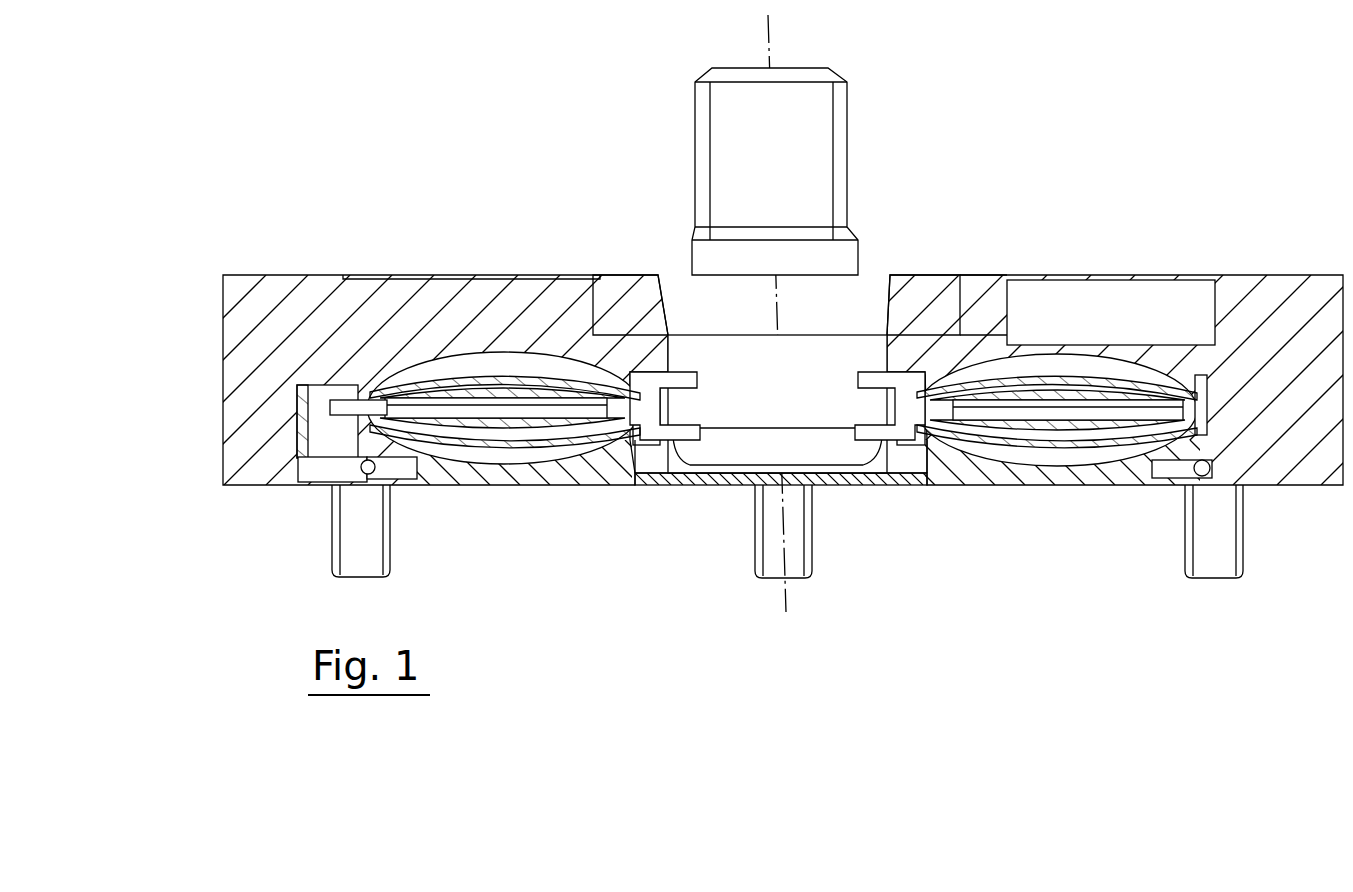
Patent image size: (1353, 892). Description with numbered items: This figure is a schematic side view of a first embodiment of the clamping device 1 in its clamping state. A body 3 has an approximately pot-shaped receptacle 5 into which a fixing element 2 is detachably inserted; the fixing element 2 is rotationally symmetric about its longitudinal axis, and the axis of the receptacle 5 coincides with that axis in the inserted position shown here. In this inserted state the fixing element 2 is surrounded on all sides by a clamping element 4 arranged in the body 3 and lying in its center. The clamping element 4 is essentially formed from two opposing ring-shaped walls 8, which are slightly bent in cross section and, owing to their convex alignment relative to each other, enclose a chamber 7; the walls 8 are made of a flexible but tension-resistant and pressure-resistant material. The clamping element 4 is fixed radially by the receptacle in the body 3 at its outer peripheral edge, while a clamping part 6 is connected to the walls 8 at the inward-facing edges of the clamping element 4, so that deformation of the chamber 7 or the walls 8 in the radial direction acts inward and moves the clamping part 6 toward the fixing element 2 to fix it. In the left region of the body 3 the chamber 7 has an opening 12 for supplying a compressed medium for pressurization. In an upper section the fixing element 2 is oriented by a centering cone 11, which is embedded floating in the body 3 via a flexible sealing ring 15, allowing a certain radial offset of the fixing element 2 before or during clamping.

The optical assembly 1 is at (222, 142).
The fixing element 2 is at (812, 118).
The body 3 is at (270, 292).
The clamping element 4 is at (530, 437).
The receptacle 5 is at (658, 213).
The clamping part 6 is at (650, 442).
The chamber 7 is at (430, 410).
The ring-shaped walls 8 is at (480, 378).
The centering cone 11 is at (908, 282).
The opening 12 is at (343, 407).
The flexible sealing ring 15 is at (940, 288).